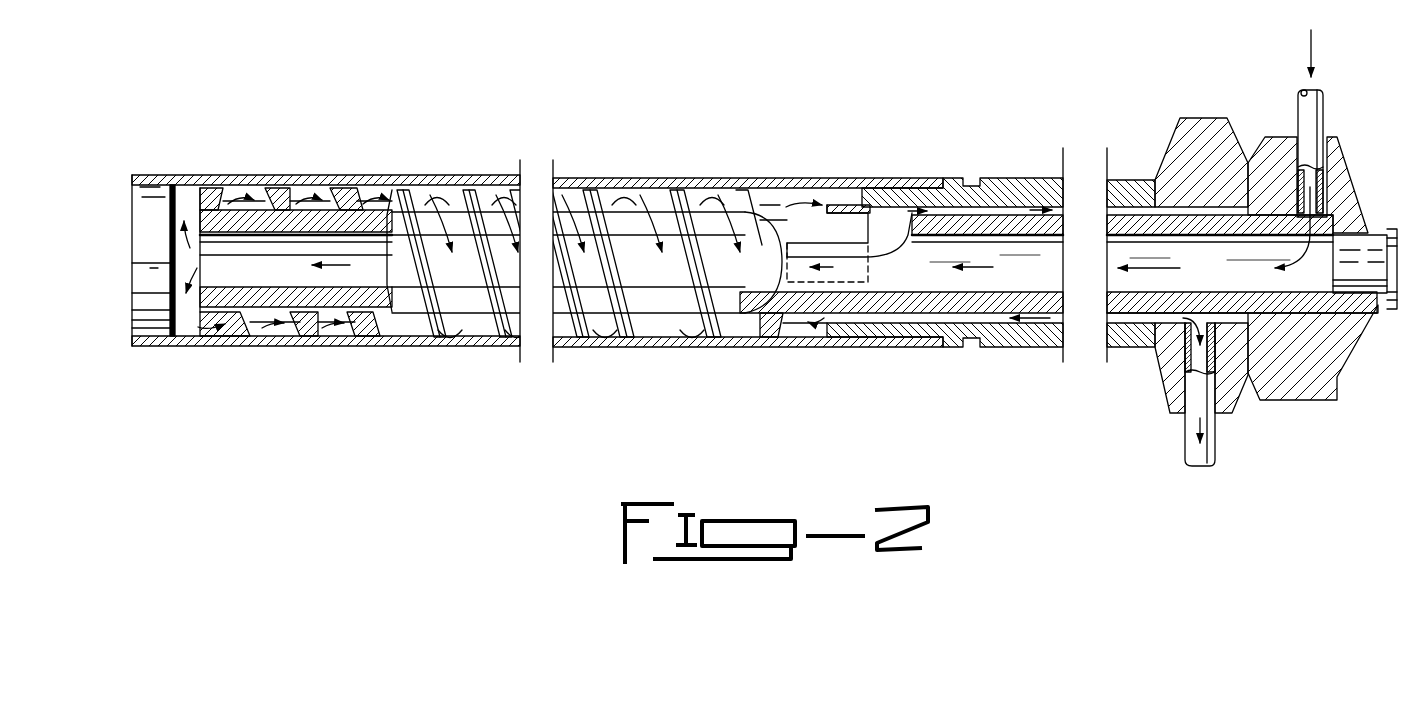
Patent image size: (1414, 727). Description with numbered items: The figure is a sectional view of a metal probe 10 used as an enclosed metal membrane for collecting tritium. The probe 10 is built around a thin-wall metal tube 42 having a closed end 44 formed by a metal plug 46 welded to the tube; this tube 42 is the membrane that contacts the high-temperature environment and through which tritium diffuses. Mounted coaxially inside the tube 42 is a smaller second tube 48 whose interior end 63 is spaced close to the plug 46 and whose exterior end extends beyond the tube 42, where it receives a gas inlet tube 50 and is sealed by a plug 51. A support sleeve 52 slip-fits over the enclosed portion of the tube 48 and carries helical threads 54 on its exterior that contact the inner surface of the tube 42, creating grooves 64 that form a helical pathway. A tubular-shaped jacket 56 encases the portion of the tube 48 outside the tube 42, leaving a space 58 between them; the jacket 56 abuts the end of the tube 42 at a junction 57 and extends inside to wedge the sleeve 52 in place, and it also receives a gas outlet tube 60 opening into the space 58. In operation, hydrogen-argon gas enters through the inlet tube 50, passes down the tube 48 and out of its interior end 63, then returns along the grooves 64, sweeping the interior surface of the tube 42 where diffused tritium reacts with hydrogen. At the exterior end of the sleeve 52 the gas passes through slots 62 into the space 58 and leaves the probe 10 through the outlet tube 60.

The metal probe 10 is at (733, 372).
The thin-wall metal tube 42 is at (314, 183).
The closed end 44 is at (130, 314).
The metal plug 46 is at (156, 200).
The second tube 48 is at (270, 302).
The gas inlet tube 50 is at (1307, 112).
The plug 51 is at (1360, 257).
The support sleeve 52 is at (654, 217).
The helical threads 54 is at (465, 195).
The tubular-shaped jacket 56 is at (1030, 190).
The junction 57 is at (947, 176).
The space 58 is at (1000, 318).
The gas outlet tube 60 is at (1190, 432).
The slots 62 is at (841, 245).
The interior end 63 is at (203, 262).
The grooves 64 is at (413, 330).